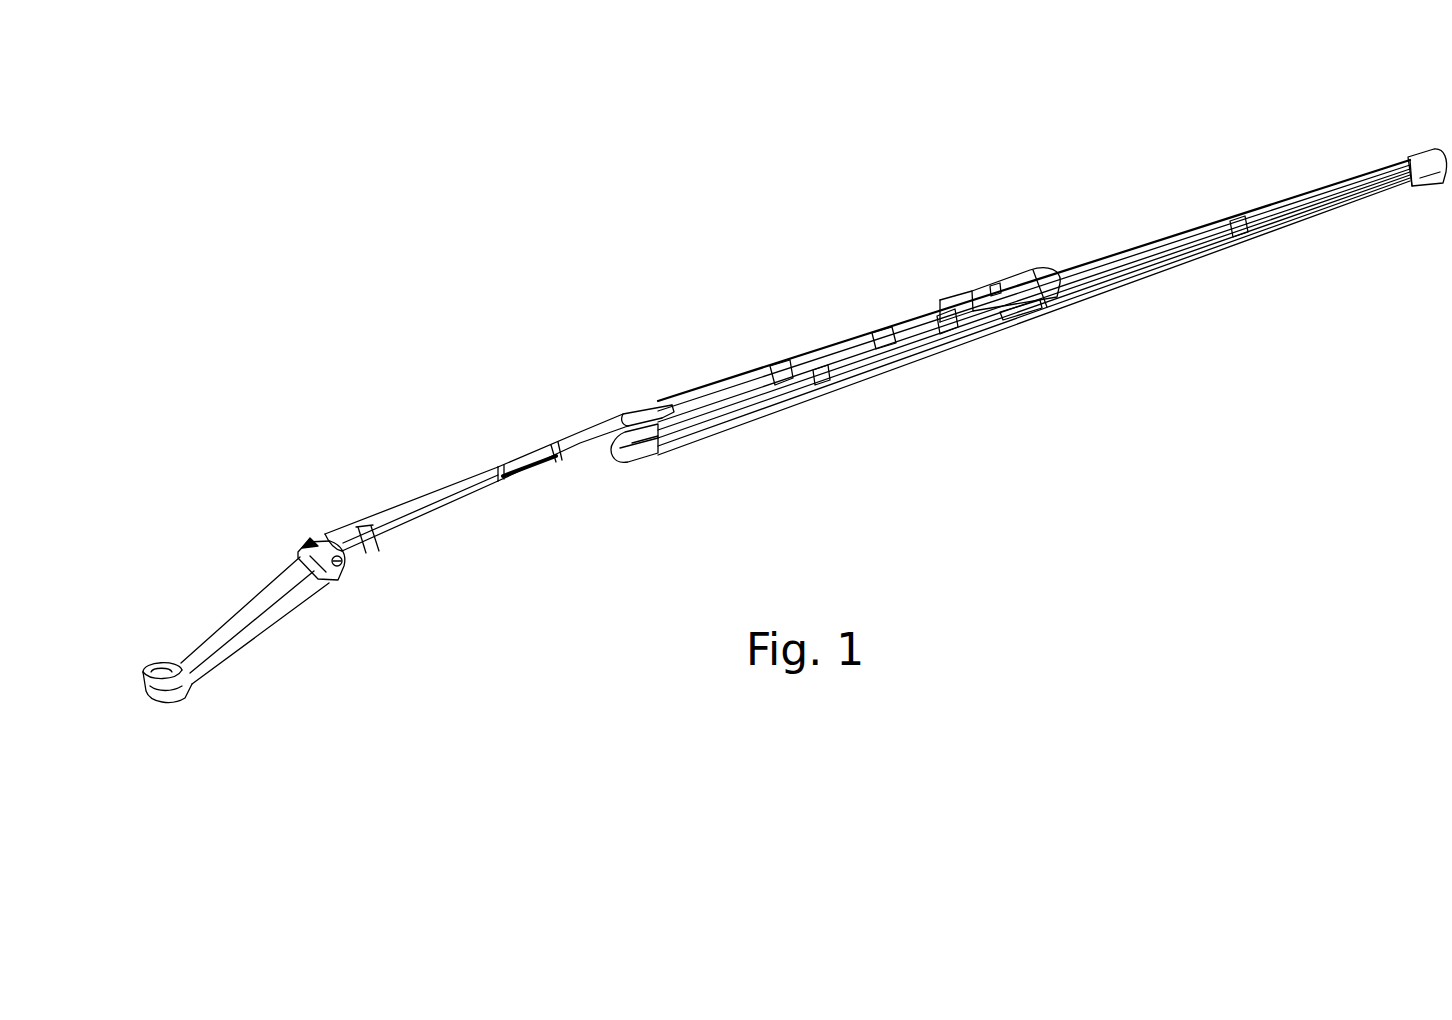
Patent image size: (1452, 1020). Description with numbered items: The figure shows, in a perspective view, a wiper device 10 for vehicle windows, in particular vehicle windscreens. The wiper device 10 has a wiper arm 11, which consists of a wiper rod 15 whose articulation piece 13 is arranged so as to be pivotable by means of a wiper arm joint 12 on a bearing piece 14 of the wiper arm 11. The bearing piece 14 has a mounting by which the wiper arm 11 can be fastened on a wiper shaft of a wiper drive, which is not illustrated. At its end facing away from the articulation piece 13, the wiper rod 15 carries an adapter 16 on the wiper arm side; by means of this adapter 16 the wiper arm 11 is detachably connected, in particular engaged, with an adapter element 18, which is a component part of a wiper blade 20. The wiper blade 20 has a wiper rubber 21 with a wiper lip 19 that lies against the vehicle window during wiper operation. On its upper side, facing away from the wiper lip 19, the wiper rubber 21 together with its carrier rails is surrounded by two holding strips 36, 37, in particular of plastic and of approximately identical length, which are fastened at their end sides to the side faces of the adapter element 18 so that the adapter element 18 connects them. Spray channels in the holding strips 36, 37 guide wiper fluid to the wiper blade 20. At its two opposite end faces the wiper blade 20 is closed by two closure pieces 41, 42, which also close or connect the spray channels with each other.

The wiper device 10 is at (803, 280).
The wiper arm 11 is at (563, 388).
The wiper arm joint 12 is at (343, 562).
The articulation piece 13 is at (400, 508).
The bearing piece 14 is at (218, 624).
The wiper rod 15 is at (610, 417).
The adapter 16 is at (1022, 280).
The adapter element 18 is at (1047, 313).
The wiper lip 19 is at (686, 443).
The wiper blade 20 is at (1145, 242).
The wiper rubber 21 is at (790, 402).
The holding strip 36 is at (887, 367).
The holding strip 37 is at (1312, 197).
The closure piece 41 is at (630, 464).
The closure piece 42 is at (1423, 162).